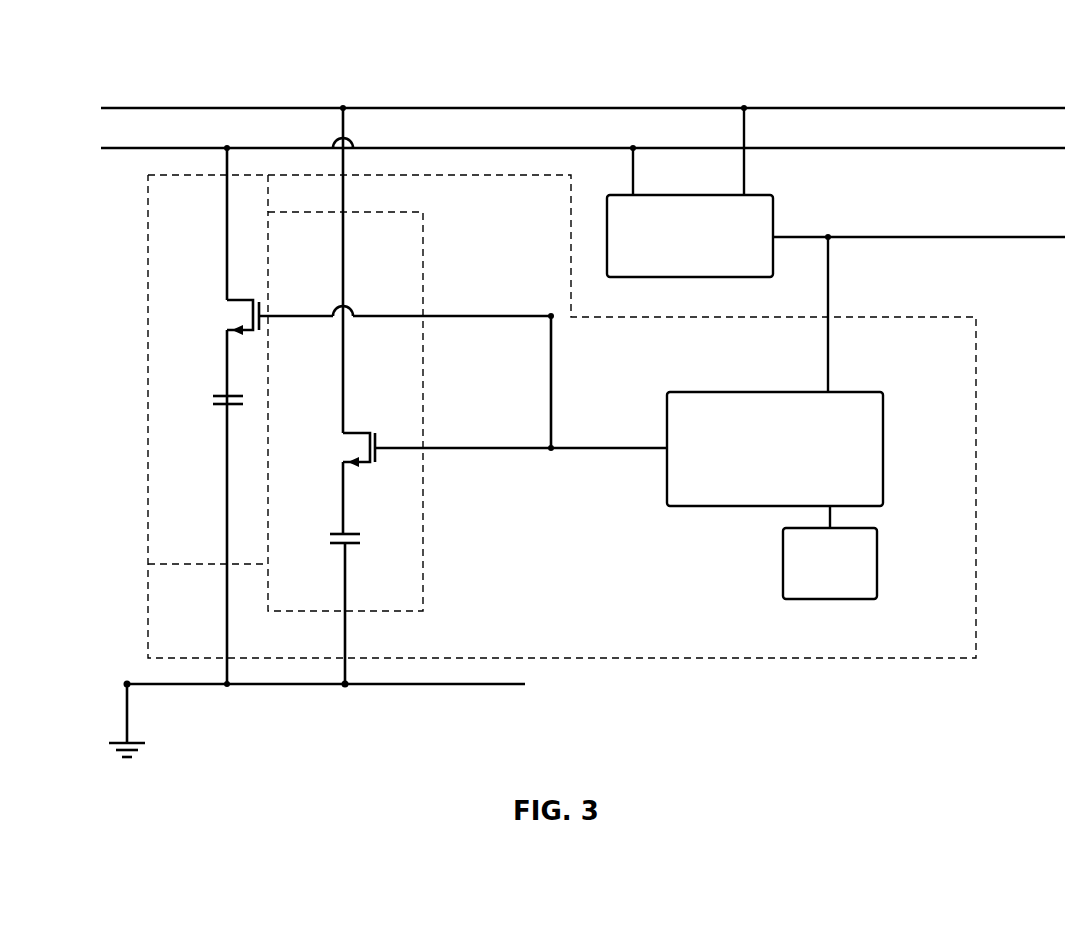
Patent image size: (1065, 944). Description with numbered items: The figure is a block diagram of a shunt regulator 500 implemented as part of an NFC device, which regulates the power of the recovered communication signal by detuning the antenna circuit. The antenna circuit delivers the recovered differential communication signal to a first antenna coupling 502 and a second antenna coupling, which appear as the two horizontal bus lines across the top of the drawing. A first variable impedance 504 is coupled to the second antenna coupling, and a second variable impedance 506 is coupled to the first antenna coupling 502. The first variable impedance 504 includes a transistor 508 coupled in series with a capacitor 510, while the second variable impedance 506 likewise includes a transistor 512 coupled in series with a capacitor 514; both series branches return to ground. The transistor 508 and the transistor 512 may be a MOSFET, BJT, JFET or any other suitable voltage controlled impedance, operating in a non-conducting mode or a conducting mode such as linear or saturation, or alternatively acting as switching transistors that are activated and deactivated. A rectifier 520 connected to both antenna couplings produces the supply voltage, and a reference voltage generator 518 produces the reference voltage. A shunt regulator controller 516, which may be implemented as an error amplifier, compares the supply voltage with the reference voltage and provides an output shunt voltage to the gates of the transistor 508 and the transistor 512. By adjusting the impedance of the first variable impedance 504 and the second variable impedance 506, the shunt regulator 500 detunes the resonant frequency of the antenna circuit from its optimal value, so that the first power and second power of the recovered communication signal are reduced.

The shunt regulator 500 is at (533, 175).
The first bus line 502 is at (121, 108).
The first variable impedance 504 is at (208, 175).
The second variable impedance 506 is at (408, 212).
The transistor 508 is at (250, 322).
The capacitor 510 is at (225, 396).
The transistor 512 is at (362, 452).
The capacitor 514 is at (352, 534).
The shunt regulator controller 516 is at (857, 392).
The reference voltage generator 518 is at (878, 562).
The rectifier 520 is at (671, 278).